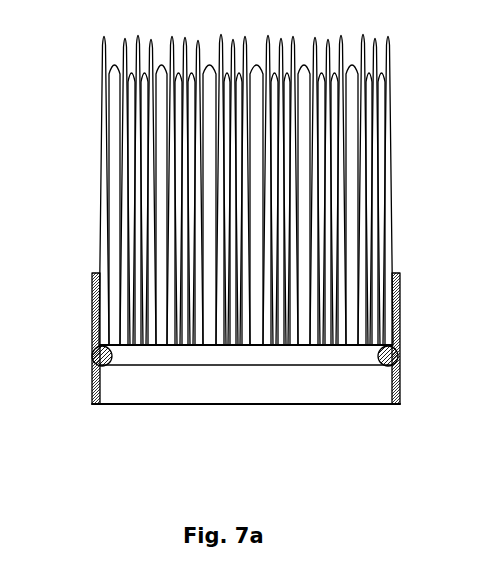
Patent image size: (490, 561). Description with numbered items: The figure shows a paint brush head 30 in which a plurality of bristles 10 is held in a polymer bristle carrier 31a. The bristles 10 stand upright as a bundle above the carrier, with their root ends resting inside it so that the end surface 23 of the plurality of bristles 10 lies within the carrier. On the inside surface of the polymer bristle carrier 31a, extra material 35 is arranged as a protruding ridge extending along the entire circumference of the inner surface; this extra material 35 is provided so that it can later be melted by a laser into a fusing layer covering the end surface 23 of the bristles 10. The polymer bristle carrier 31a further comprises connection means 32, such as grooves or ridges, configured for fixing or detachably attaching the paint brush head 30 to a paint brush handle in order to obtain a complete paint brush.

The paint brush head 30 is at (44, 60).
The bristles 10 is at (293, 190).
The polymer bristle carrier 31a is at (212, 327).
The end surface 23 is at (275, 315).
The extra material 35 is at (246, 423).
The connection means 32 is at (134, 378).